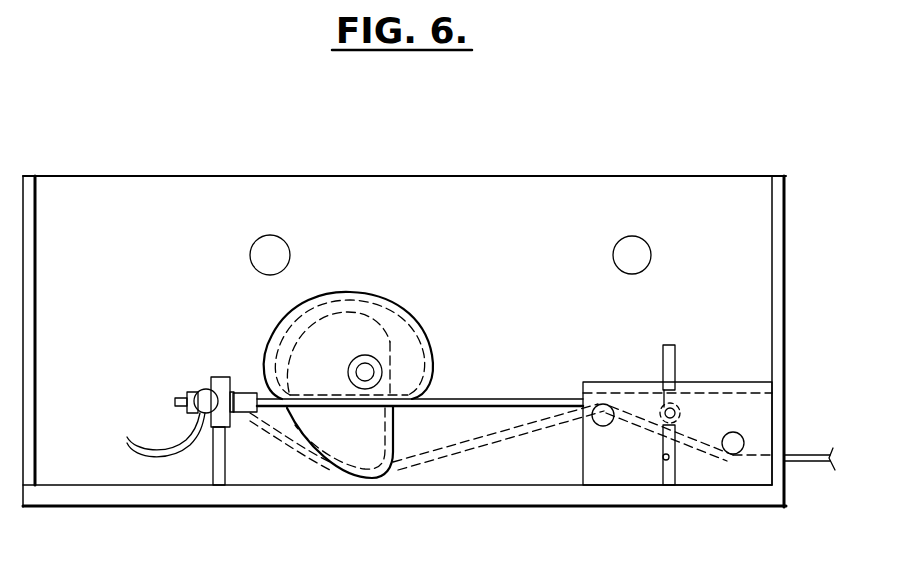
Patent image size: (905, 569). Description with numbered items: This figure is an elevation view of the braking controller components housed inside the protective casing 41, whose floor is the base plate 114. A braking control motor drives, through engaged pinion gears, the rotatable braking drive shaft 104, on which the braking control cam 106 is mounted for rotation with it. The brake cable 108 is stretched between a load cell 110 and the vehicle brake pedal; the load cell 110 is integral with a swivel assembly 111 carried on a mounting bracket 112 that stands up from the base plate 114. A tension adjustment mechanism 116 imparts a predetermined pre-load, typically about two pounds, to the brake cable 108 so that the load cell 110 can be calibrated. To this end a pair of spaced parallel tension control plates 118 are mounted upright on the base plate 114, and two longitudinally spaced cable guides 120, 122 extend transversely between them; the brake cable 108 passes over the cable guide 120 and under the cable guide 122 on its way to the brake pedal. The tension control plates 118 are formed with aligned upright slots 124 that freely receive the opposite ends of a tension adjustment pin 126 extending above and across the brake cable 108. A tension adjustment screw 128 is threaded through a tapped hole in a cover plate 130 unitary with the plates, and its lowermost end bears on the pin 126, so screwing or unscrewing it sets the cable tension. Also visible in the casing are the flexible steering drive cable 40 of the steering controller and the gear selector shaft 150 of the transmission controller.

The steering drive cable 40 is at (281, 238).
The protective casing 41 is at (777, 237).
The braking drive shaft 104 is at (368, 370).
The braking control cam 106 is at (338, 291).
The brake cable 108 is at (477, 398).
The load cell 110 is at (192, 395).
The swivel assembly 111 is at (210, 417).
The mounting bracket 112 is at (226, 468).
The base plate 114 is at (83, 497).
The tension adjustment mechanism 116 is at (721, 285).
The tension control plates 118 is at (750, 413).
The cable guide 120 is at (603, 415).
The cable guide 122 is at (733, 449).
The upright slots 124 is at (663, 456).
The tension adjustment pin 126 is at (672, 410).
The tension adjustment screw 128 is at (665, 344).
The cover plate 130 is at (600, 380).
The gear selector shaft 150 is at (634, 243).